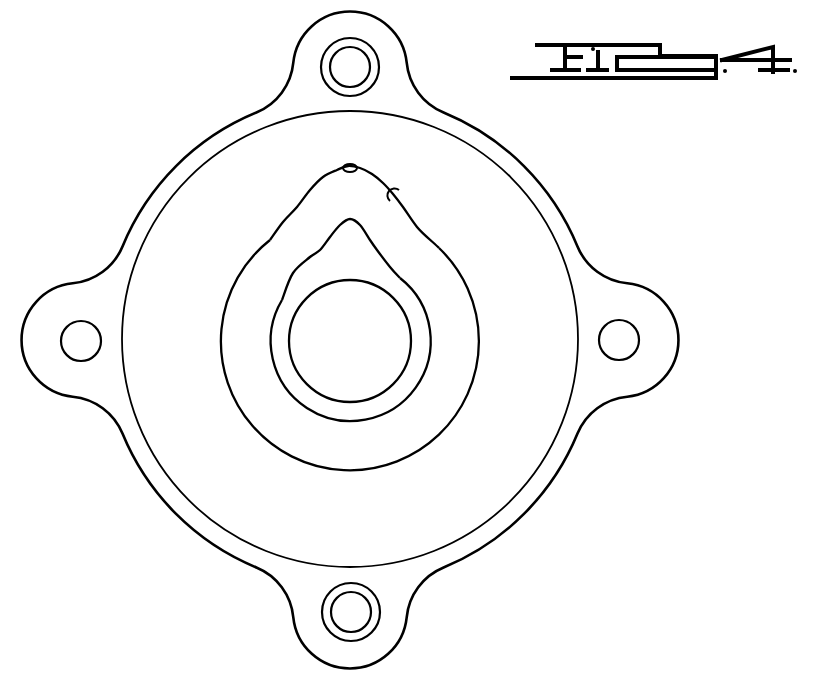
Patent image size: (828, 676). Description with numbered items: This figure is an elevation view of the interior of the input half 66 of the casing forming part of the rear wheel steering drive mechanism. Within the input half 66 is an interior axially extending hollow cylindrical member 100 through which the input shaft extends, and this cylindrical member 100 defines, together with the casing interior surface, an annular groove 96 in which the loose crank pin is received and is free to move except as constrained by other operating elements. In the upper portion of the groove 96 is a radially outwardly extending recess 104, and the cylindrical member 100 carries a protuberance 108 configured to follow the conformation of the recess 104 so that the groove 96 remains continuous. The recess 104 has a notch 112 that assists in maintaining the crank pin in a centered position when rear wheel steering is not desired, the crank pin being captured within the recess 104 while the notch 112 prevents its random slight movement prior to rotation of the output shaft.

The input half 66 is at (559, 203).
The groove 96 is at (468, 295).
The hollow cylindrical member 100 is at (389, 405).
The recess 104 is at (398, 201).
The protuberance 108 is at (337, 222).
The notch 112 is at (357, 167).